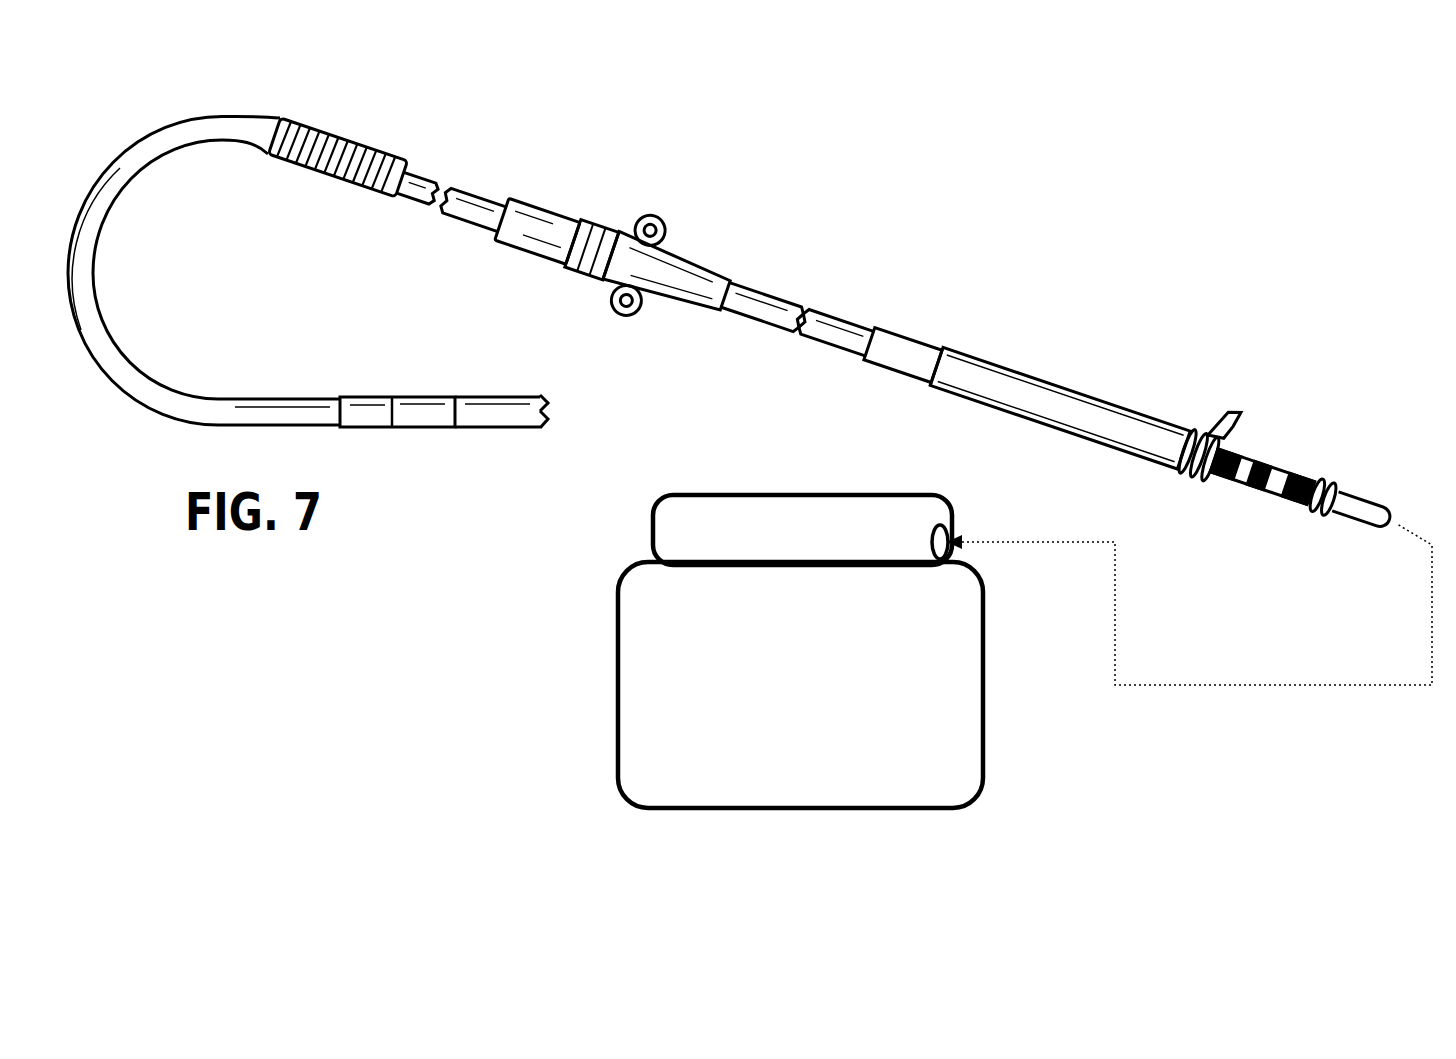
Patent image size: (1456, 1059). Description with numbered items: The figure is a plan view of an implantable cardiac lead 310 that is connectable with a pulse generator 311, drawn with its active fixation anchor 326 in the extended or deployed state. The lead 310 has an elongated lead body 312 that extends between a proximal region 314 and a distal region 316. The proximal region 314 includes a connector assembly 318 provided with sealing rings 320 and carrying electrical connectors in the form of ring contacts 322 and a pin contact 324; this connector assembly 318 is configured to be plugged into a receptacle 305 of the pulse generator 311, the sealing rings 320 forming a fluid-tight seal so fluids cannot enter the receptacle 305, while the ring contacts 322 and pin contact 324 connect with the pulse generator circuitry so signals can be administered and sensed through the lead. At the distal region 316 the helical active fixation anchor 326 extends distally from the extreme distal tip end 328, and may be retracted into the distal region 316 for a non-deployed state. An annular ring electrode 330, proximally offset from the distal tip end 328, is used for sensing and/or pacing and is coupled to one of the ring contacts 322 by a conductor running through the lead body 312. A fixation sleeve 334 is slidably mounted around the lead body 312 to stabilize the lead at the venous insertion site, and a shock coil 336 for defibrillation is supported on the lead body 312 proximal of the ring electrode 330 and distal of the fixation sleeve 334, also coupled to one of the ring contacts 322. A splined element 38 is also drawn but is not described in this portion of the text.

The connector 38 is at (484, 196).
The receptacle 305 is at (937, 535).
The lead 310 is at (846, 268).
The pulse generator 311 is at (568, 658).
The lead body 312 is at (261, 380).
The proximal region 314 is at (1340, 529).
The distal region 316 is at (553, 368).
The connector assembly 318 is at (1300, 512).
The sealing rings 320 is at (1220, 427).
The ring contacts 322 is at (1250, 460).
The pin contact 324 is at (1357, 503).
The active fixation anchor 326 is at (545, 407).
The extreme distal tip end 328 is at (537, 429).
The ring electrode 330 is at (363, 430).
The fixation sleeve 334 is at (693, 262).
The shock coil 336 is at (325, 182).